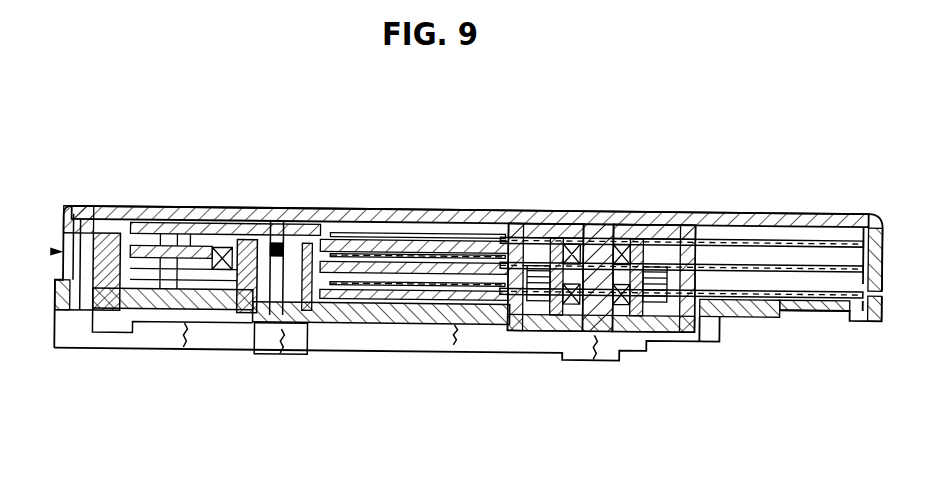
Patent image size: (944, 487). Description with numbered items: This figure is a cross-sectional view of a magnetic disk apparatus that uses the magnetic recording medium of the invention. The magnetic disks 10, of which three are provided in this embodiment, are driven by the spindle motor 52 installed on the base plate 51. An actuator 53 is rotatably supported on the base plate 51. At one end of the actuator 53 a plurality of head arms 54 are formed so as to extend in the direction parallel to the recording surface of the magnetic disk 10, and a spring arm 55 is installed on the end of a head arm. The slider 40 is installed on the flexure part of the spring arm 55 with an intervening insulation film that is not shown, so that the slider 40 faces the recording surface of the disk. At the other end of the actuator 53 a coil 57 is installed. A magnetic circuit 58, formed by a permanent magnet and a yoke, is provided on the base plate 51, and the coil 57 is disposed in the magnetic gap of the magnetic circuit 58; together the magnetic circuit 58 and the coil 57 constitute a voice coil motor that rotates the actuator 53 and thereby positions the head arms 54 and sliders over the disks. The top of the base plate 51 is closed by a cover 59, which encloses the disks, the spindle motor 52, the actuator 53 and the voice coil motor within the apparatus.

The magnetic disk 10 is at (815, 230).
The slider 40 is at (493, 210).
The base plate 51 is at (398, 322).
The spindle motor 52 is at (710, 220).
The actuator 53 is at (350, 322).
The head arms 54 is at (385, 210).
The spring arm 55 is at (458, 210).
The coil 57 is at (167, 207).
The magnetic circuit 58 is at (142, 201).
The cover 59 is at (305, 208).